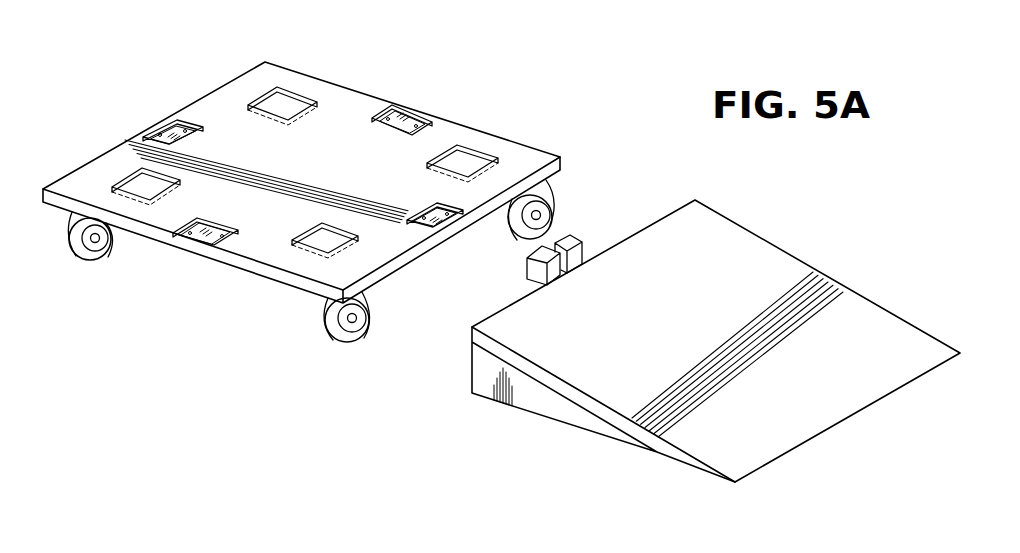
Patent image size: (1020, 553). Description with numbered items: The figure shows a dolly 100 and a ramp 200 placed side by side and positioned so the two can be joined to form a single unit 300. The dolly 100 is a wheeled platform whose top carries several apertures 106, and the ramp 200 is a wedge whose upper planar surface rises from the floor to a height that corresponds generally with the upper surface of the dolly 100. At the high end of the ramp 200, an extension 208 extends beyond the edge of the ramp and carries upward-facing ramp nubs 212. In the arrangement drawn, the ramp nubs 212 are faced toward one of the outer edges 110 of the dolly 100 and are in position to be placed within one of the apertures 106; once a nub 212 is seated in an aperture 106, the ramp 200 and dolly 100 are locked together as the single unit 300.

The dolly 100 is at (330, 117).
The aperture 106 is at (178, 233).
The outer edge 110 is at (387, 266).
The ramp 200 is at (753, 264).
The extension 208 is at (497, 299).
The ramp nub 212 is at (550, 250).
The single unit 300 is at (536, 63).